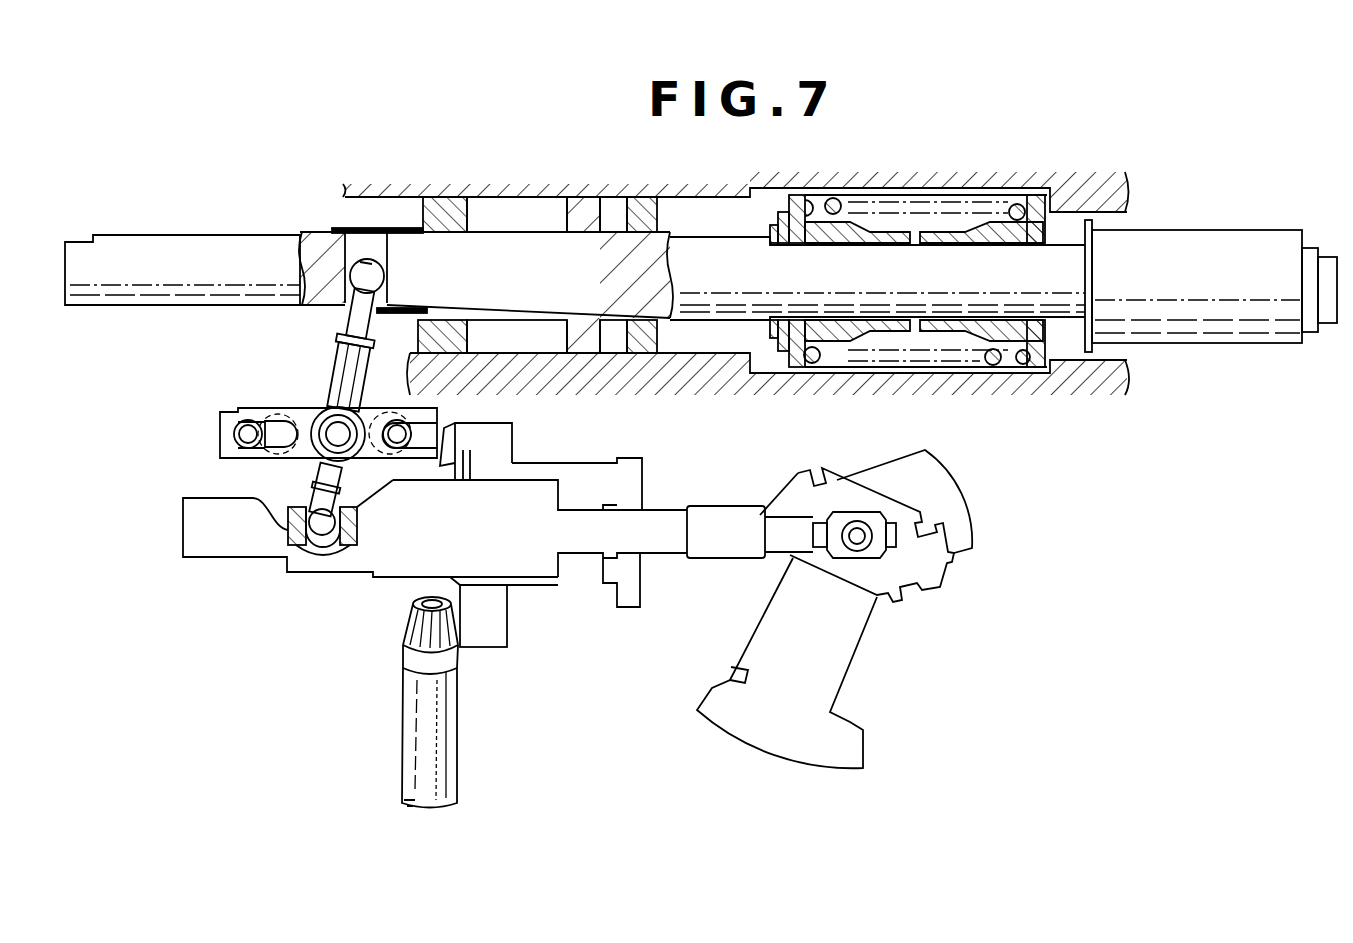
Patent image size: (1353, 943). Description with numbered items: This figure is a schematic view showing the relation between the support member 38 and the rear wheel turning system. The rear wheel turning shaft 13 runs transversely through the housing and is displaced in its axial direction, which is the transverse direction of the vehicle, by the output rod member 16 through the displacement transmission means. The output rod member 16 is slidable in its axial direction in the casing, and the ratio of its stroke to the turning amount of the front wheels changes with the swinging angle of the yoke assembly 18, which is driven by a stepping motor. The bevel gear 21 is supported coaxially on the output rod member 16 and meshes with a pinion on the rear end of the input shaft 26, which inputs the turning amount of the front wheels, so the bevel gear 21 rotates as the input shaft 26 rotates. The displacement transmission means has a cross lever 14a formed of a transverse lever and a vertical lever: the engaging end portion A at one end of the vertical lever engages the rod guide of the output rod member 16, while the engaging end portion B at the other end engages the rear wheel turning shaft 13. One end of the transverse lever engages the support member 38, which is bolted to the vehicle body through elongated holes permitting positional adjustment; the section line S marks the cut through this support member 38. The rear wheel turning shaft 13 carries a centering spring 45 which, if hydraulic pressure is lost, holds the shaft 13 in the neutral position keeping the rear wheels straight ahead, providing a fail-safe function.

The rear wheel turning shaft 13 is at (127, 306).
The support member 38 is at (300, 407).
The bevel gear 21 is at (505, 440).
The centering spring 45 is at (997, 366).
The cross lever 14a is at (347, 468).
The output rod member 16 is at (216, 558).
The input shaft 26 is at (444, 732).
The yoke assembly 18 is at (898, 614).
The engaging end portion A is at (317, 547).
The engaging end portion B is at (355, 262).
The section line S- S is at (182, 472).